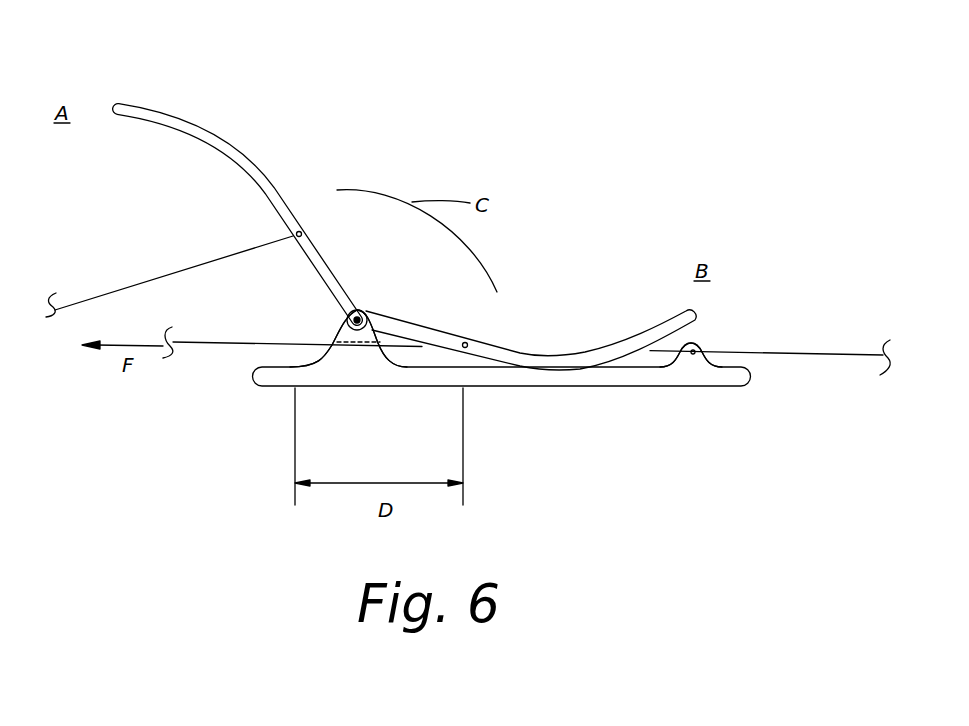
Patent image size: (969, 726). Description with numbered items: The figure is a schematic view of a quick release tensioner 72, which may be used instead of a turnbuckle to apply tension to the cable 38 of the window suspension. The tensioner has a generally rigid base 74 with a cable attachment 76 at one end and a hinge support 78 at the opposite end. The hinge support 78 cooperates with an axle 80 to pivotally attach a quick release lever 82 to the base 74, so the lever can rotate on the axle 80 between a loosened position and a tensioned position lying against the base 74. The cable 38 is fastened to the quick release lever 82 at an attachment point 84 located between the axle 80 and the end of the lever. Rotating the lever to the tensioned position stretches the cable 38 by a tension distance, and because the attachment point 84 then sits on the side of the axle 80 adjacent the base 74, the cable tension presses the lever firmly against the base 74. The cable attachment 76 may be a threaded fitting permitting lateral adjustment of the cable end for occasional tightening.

The quick release tensioner 72 is at (513, 61).
The base 74 is at (510, 388).
The cable attachment 76 is at (693, 343).
The hinge support 78 is at (340, 330).
The axle 80 is at (357, 310).
The quick release lever 82 is at (237, 143).
The attachment point 84 is at (305, 228).
The cable 38 is at (123, 285).